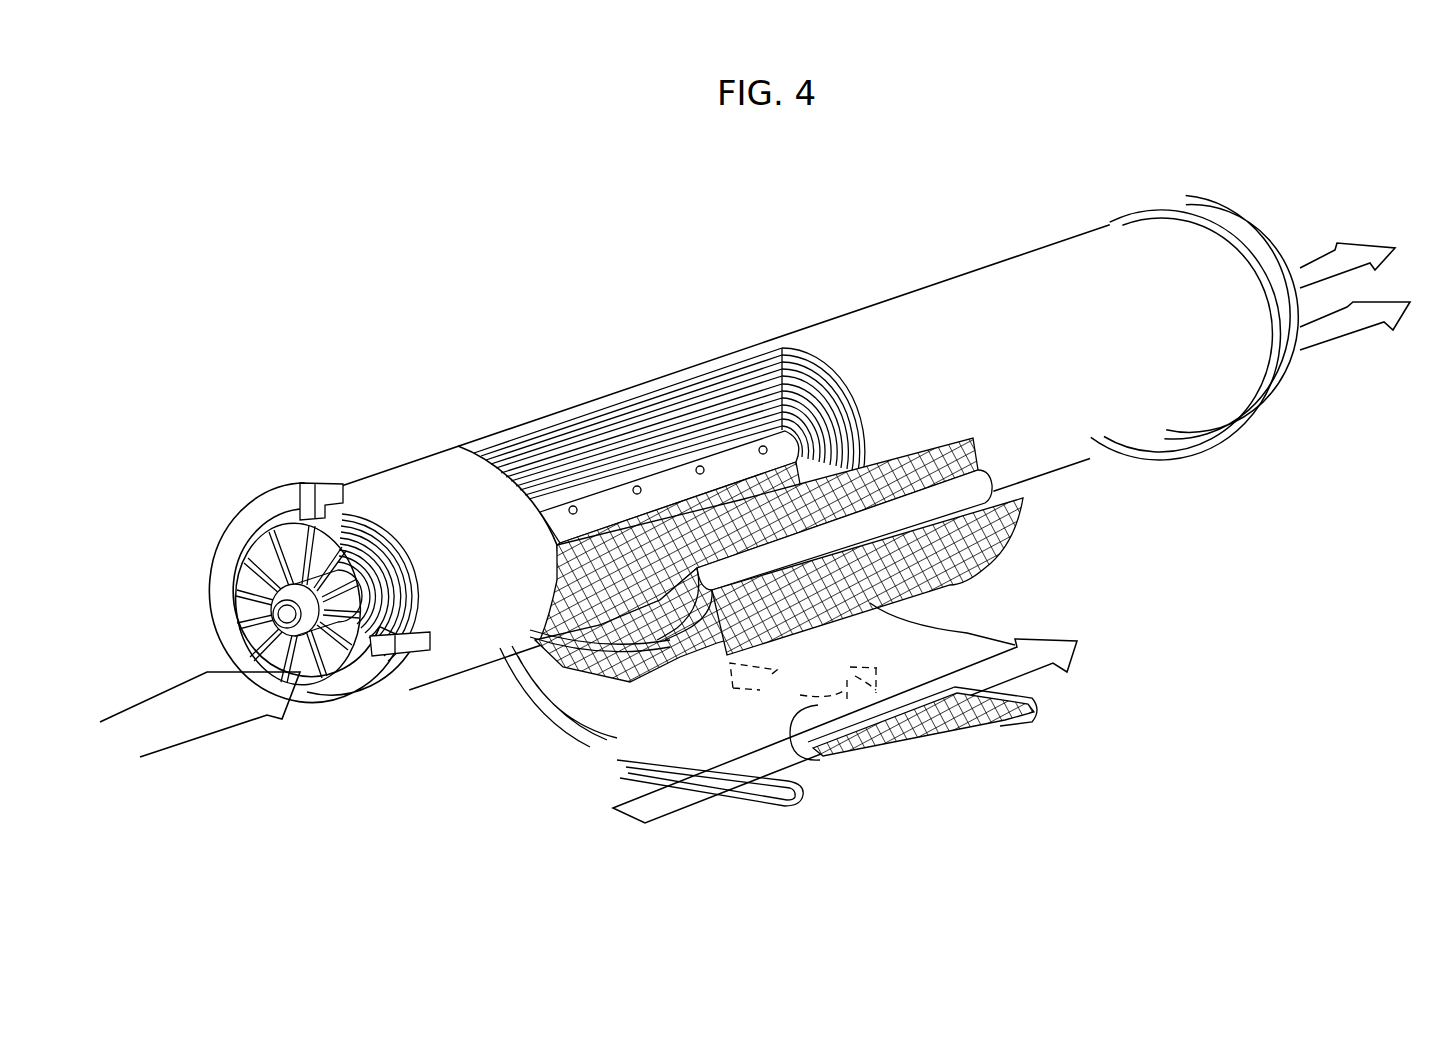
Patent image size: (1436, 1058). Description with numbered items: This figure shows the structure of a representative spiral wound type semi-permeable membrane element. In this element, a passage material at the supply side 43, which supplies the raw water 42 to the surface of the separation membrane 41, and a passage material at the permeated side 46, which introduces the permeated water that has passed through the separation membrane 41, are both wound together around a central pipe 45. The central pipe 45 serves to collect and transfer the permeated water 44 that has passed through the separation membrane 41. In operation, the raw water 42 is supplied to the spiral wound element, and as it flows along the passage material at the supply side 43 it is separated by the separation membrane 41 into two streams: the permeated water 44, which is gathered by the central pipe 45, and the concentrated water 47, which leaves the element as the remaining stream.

The separation membrane 41 is at (1053, 686).
The raw water 42 is at (613, 759).
The passage material at the supply side 43 is at (1009, 528).
The permeated water 44 is at (831, 849).
The central pipe 45 is at (621, 513).
The passage material at the permeated side 46 is at (893, 741).
The concentrated water 47 is at (1333, 338).